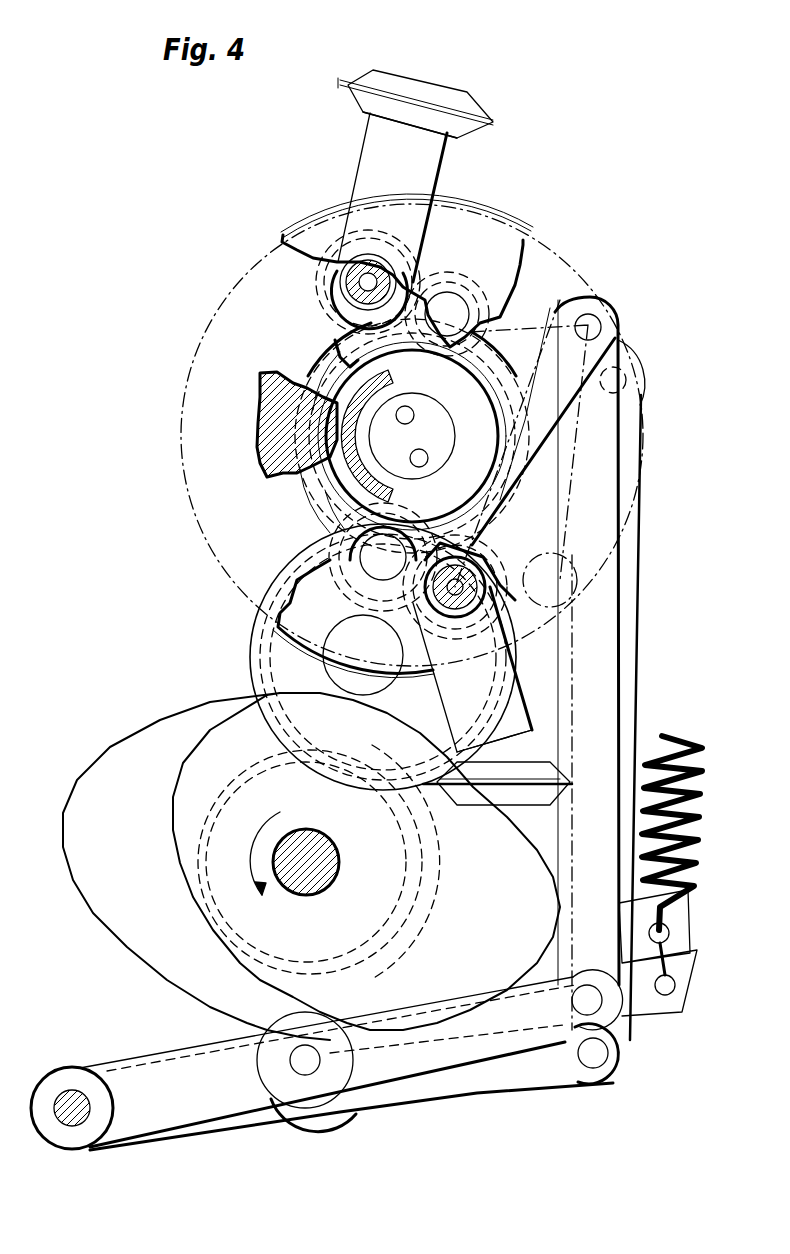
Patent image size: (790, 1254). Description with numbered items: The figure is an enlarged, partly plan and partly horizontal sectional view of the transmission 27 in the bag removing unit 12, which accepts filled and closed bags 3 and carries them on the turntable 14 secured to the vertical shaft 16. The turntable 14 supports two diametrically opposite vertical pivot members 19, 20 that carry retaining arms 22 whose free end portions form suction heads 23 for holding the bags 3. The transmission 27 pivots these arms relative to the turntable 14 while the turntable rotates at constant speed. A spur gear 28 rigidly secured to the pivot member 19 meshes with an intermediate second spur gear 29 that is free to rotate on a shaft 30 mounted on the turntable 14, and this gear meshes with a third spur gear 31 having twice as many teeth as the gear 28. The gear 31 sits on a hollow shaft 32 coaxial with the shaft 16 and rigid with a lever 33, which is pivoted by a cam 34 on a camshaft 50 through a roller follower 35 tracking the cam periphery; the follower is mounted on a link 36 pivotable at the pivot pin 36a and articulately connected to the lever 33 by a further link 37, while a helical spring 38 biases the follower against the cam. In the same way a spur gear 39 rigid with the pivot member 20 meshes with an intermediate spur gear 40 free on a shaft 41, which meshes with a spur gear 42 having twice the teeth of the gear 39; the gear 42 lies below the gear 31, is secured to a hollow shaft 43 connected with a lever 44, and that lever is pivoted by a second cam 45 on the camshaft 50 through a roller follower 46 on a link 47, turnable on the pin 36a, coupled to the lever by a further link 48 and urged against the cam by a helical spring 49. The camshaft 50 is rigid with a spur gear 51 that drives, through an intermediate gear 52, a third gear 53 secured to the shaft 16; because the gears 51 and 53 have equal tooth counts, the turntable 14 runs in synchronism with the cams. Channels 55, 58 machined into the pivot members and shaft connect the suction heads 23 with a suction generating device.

The bag 3 is at (448, 96).
The bag removing unit 12 is at (528, 157).
The turntable 14 is at (302, 237).
The vertical shaft 16 is at (398, 451).
The pivot member 19 is at (387, 277).
The pivot member 20 is at (472, 567).
The retaining arm 22 is at (425, 170).
The suction head 23 is at (428, 122).
The transmission 27 is at (250, 497).
The spur gear 28 is at (323, 288).
The second spur gear 29 is at (447, 272).
The shaft 30 is at (452, 290).
The third spur gear 31 is at (487, 350).
The hollow shaft 32 is at (376, 402).
The lever 33 is at (297, 370).
The cam 34 is at (128, 738).
The roller follower 35 is at (320, 1123).
The link 36 is at (478, 1092).
The pivot pin 36a is at (68, 1092).
The further link 37 is at (632, 437).
The helical spring 38 is at (680, 948).
The spur gear 39 is at (483, 537).
The intermediate spur gear 40 is at (355, 538).
The shaft 41 is at (380, 575).
The spur gear 42 is at (338, 511).
The hollow shaft 43 is at (310, 485).
The lever 44 is at (342, 332).
The second cam 45 is at (210, 768).
The roller follower 46 is at (357, 1050).
The link 47 is at (527, 1042).
The further link 48 is at (603, 528).
The helical spring 49 is at (675, 742).
The camshaft 50 is at (340, 850).
The spur gear 51 is at (387, 947).
The intermediate gear 52 is at (250, 655).
The third gear 53 is at (337, 353).
The channel 55 is at (367, 270).
The channel 58 is at (428, 450).